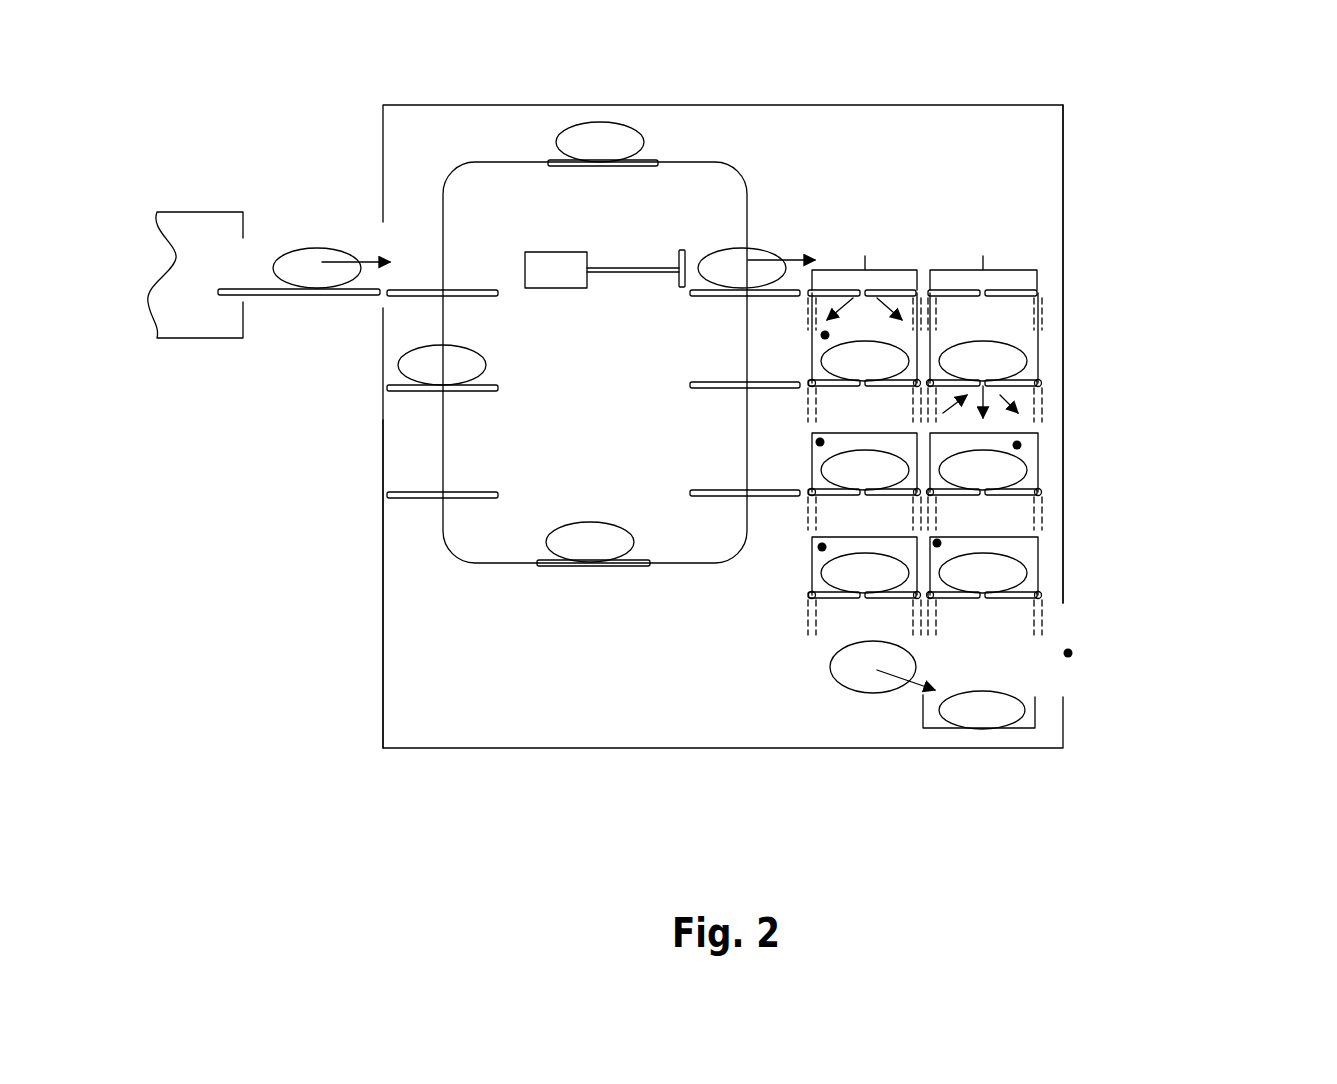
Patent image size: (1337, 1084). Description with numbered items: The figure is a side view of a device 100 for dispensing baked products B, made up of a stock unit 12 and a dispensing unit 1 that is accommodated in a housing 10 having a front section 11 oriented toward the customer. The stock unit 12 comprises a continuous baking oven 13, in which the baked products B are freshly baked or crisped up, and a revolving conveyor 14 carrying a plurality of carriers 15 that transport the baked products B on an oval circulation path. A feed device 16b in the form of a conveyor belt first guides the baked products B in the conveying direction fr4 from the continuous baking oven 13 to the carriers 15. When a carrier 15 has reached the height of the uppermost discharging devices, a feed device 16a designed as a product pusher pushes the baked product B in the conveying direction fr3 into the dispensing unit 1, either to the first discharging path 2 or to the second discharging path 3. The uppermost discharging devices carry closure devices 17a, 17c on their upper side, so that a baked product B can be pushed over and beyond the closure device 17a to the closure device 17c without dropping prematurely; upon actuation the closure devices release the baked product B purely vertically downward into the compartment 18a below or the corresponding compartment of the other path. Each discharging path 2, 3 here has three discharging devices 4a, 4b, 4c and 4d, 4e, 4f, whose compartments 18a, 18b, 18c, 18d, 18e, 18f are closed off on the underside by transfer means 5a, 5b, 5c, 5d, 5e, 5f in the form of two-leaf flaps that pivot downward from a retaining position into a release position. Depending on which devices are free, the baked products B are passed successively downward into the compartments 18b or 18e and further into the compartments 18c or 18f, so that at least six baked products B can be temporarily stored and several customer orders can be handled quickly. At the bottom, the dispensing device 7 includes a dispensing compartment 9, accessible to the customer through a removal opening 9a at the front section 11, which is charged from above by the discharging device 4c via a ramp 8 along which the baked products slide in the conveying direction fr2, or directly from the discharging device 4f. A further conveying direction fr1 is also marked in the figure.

The device for dispensing baked products 100 is at (275, 137).
The dispensing unit 1 is at (1002, 165).
The housing 10 is at (623, 767).
The front section 11 is at (1063, 137).
The stock unit 12 is at (340, 603).
The continuous baking oven 13 is at (200, 342).
The revolving conveyor 14 is at (470, 563).
The carriers 15 is at (403, 498).
The feed device 16a is at (635, 267).
The feed device 16b is at (317, 295).
The closure device 17a is at (880, 290).
The closure device 17c is at (993, 292).
The first discharging path 2 is at (864, 257).
The second discharging path 3 is at (983, 257).
The discharging device 4a is at (812, 342).
The discharging device 4b is at (812, 465).
The discharging device 4c is at (810, 545).
The discharging device 4d is at (1040, 340).
The discharging device 4e is at (1040, 466).
The discharging device 4f is at (1040, 570).
The transfer means 5a is at (840, 405).
The transfer means 5b is at (840, 510).
The transfer means 5c is at (825, 605).
The transfer means 5d is at (1040, 385).
The transfer means 5e is at (1040, 495).
The transfer means 5f is at (1040, 600).
The compartment 18a is at (822, 333).
The compartment 18b is at (820, 442).
The compartment 18c is at (822, 548).
The compartment 18d is at (1010, 336).
The compartment 18e is at (1017, 445).
The compartment 18f is at (943, 597).
The dispensing device 7 is at (1125, 665).
The ramp 8 is at (830, 665).
The dispensing compartment 9 is at (1022, 728).
The removal opening 9a is at (1080, 650).
The baked products B is at (587, 550).
The conveying direction fr1 is at (982, 378).
The conveying direction fr2 is at (917, 683).
The conveying direction fr3 is at (765, 255).
The conveying direction fr4 is at (362, 261).